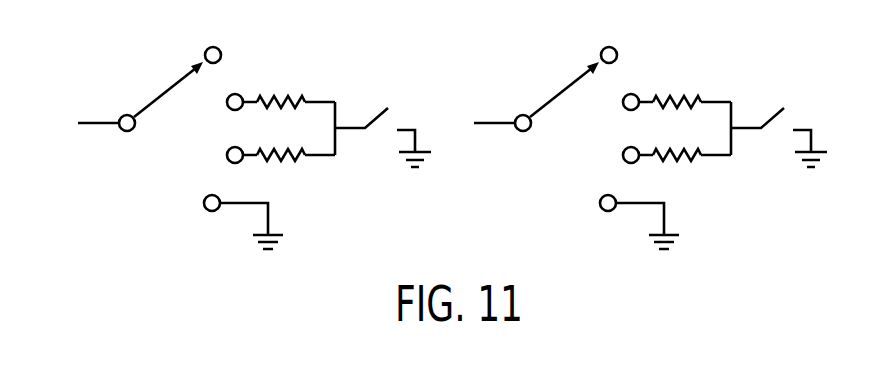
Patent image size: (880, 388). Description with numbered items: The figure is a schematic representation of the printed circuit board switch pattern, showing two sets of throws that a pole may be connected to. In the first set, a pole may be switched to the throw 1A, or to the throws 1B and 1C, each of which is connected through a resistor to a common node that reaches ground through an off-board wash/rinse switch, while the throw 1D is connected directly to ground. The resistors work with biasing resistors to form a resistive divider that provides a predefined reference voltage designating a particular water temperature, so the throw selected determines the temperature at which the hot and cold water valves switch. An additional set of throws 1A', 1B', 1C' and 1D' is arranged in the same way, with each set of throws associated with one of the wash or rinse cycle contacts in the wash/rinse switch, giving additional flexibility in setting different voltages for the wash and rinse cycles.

The throw 1A is at (230, 42).
The throw 1B is at (281, 86).
The throw 1C is at (281, 170).
The throw 1D is at (227, 226).
The throw 1A' is at (628, 42).
The throw 1B' is at (677, 86).
The throw 1C' is at (677, 170).
The throw 1D' is at (634, 231).